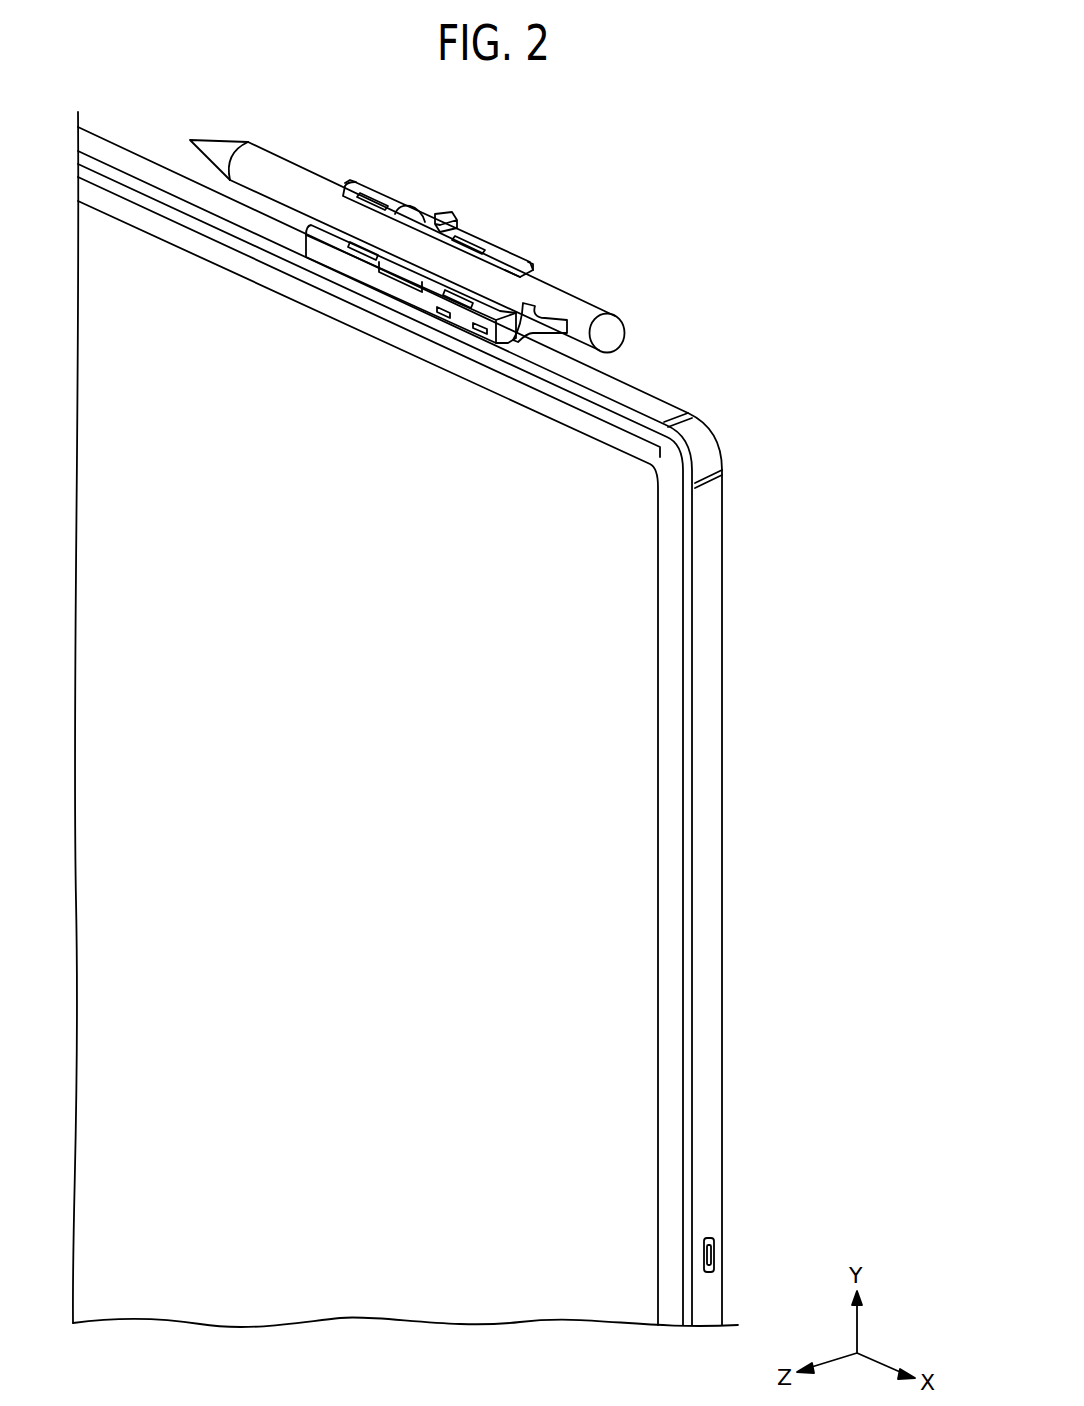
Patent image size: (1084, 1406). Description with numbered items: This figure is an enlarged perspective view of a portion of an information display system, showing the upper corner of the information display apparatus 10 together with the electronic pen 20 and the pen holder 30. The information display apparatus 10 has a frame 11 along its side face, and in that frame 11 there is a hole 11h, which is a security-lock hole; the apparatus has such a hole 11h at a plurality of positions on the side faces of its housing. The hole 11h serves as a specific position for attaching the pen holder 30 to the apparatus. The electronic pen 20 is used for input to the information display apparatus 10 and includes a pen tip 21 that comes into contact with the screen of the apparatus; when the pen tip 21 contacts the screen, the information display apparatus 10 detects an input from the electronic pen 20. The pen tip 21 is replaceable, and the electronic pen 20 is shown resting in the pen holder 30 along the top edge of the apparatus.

The information display apparatus 10 is at (617, 808).
The frame 11 is at (712, 1058).
The hole 11h is at (714, 1252).
The electronic pen 20 is at (567, 300).
The pen tip 21 is at (190, 140).
The pen holder 30 is at (473, 232).